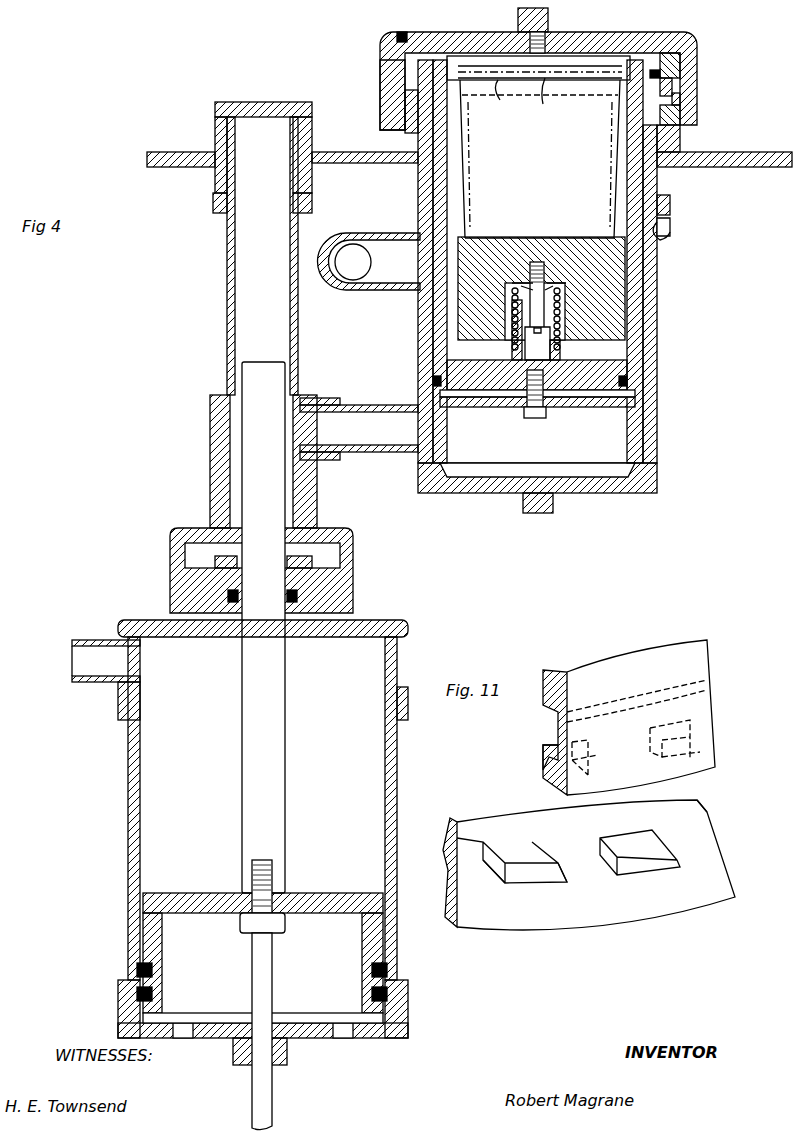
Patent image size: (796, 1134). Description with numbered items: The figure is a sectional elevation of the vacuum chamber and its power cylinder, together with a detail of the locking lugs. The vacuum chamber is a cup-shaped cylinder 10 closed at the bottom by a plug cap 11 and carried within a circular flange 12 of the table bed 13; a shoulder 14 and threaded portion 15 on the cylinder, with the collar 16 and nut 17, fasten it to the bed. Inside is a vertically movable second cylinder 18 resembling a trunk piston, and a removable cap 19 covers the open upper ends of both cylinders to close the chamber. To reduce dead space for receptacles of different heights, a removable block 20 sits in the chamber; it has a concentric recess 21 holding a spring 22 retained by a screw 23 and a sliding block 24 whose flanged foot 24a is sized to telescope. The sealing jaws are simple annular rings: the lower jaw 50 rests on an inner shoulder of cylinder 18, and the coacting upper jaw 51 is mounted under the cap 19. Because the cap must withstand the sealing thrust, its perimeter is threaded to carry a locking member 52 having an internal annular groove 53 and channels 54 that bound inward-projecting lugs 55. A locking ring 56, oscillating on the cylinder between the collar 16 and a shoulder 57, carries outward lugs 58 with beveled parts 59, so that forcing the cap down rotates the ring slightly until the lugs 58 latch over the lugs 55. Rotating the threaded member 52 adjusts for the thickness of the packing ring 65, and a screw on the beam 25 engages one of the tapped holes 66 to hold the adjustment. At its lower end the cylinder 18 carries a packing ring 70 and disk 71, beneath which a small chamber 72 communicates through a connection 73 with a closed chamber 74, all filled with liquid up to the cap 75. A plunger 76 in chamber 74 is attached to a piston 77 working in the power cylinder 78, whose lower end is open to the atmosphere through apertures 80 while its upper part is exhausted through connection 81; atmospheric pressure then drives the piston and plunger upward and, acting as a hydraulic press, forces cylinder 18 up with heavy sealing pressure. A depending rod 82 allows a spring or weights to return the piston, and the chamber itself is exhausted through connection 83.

In FIG. 4, the cup-shaped cylinder 10 is at (660, 365).
In FIG. 4, the plug cap 11 is at (580, 510).
In FIG. 4, the circular flange 12 is at (660, 186).
In FIG. 4, the table bed 13 is at (350, 163).
In FIG. 4, the shoulder 14 is at (680, 134).
In FIG. 4, the threaded portion 15 is at (670, 234).
In FIG. 4, the collar 16 is at (690, 152).
In FIG. 4, the nut 17 is at (672, 208).
In FIG. 4, the second cylinder 18 is at (657, 284).
In FIG. 4, the cap 19 is at (608, 33).
In FIG. 4, the removable block 20 is at (607, 327).
In FIG. 4, the concentric recess 21 is at (562, 288).
In FIG. 4, the spring 22 is at (512, 348).
In FIG. 4, the screw 23 is at (538, 262).
In FIG. 4, the sliding block 24 is at (516, 283).
In FIG. 4, the flanged foot 24a is at (560, 350).
In FIG. 4, the beam 25 is at (518, 22).
In FIG. 4, the lower annular jaw 50 is at (618, 90).
In FIG. 4, the upper annular jaw 51 is at (605, 67).
In FIG. 4, the locking member 52 is at (380, 44).
In FIG. 11, the locking member 52 is at (592, 668).
In FIG. 4, the internal annular groove 53 is at (405, 102).
In FIG. 11, the internal annular groove 53 is at (548, 727).
In FIG. 11, the channels 54 is at (700, 748).
In FIG. 4, the internal lugs 55 is at (405, 125).
In FIG. 11, the internal lugs 55 is at (543, 752).
In FIG. 4, the locking ring 56 is at (682, 108).
In FIG. 11, the locking ring 56 is at (610, 925).
In FIG. 4, the shoulder 57 is at (682, 80).
In FIG. 4, the lugs 58 is at (682, 92).
In FIG. 11, the lugs 58 is at (522, 880).
In FIG. 11, the beveled parts 59 is at (555, 868).
In FIG. 4, the packing ring 65 is at (676, 70).
In FIG. 4, the tapped holes 66 is at (402, 31).
In FIG. 4, the packing ring 70 is at (638, 382).
In FIG. 4, the disk 71 is at (608, 405).
In FIG. 4, the small chamber 72 is at (530, 440).
In FIG. 4, the connection 73 is at (359, 429).
In FIG. 4, the closed chamber 74 is at (263, 322).
In FIG. 4, the cap 75 is at (266, 102).
In FIG. 4, the plunger 76 is at (261, 627).
In FIG. 4, the piston 77 is at (335, 893).
In FIG. 4, the power cylinder 78 is at (397, 808).
In FIG. 4, the apertures 80 is at (185, 1040).
In FIG. 4, the connection 81 is at (106, 661).
In FIG. 4, the depending rod 82 is at (276, 988).
In FIG. 4, the connection 83 is at (369, 261).